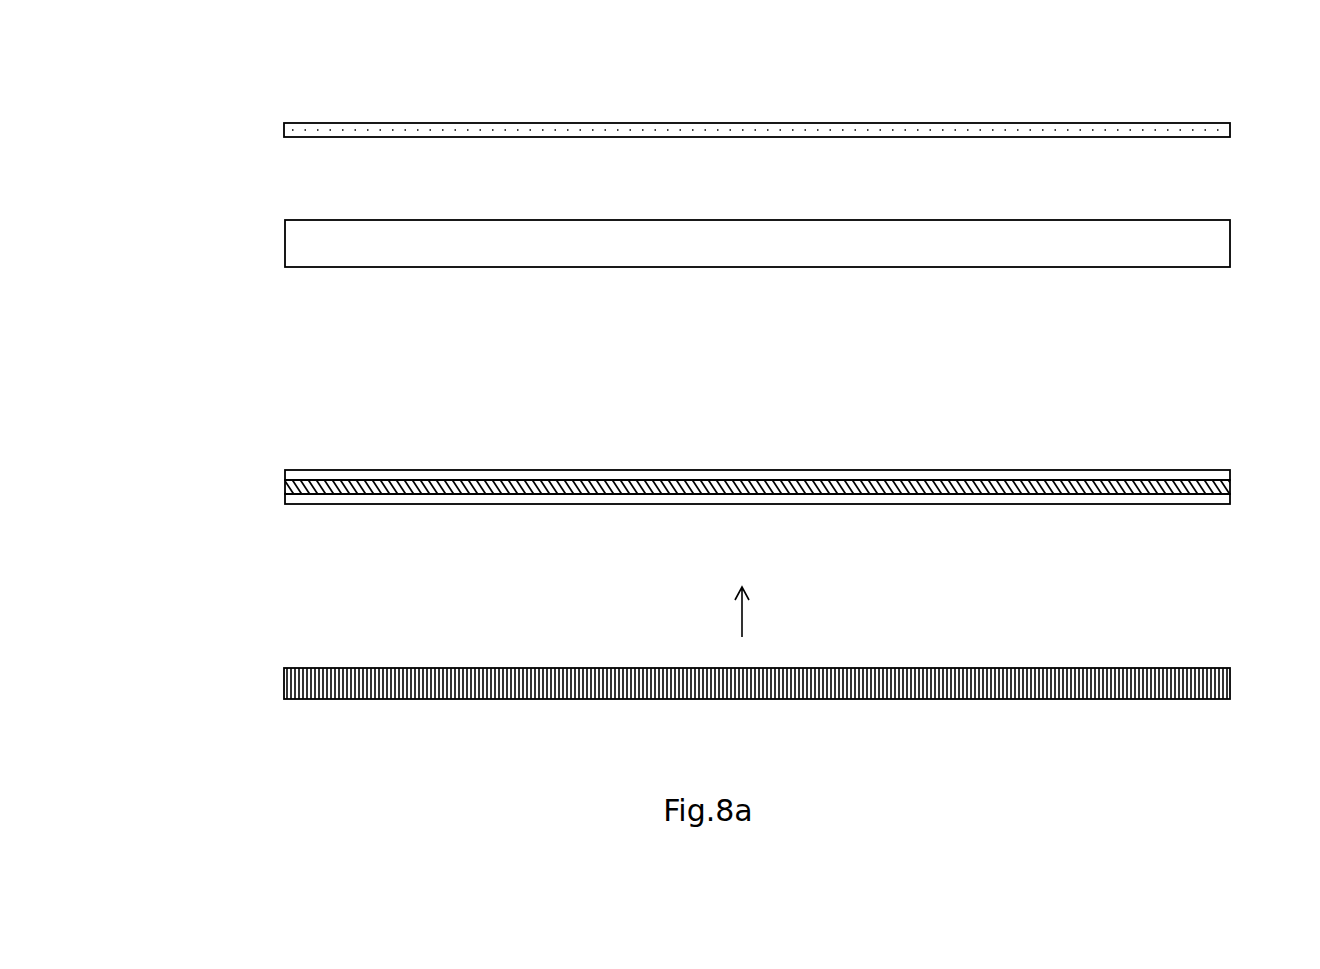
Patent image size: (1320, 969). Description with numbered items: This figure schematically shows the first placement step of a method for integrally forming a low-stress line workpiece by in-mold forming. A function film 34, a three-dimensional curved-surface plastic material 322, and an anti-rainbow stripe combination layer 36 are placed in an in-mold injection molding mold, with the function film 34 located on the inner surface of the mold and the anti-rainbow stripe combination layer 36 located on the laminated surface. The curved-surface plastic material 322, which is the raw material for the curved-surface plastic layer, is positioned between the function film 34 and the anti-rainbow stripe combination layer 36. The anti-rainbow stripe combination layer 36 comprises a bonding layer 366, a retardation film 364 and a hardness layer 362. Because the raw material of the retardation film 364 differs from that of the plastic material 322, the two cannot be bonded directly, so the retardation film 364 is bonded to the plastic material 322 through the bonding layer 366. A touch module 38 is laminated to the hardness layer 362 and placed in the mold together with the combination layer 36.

The function film 34 is at (1230, 130).
The 3D curved-surface plastic material 322 is at (285, 243).
The anti-rainbow stripe combination layer 36 is at (735, 481).
The bonding layer 366 is at (317, 470).
The retardation film 364 is at (285, 487).
The hardness layer 362 is at (347, 506).
The touch module 38 is at (345, 700).